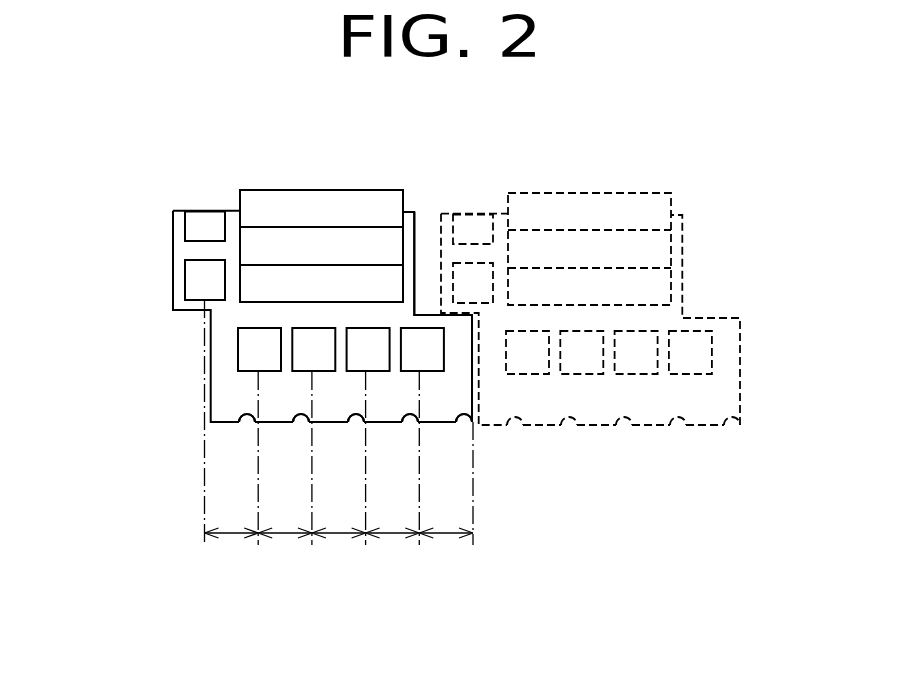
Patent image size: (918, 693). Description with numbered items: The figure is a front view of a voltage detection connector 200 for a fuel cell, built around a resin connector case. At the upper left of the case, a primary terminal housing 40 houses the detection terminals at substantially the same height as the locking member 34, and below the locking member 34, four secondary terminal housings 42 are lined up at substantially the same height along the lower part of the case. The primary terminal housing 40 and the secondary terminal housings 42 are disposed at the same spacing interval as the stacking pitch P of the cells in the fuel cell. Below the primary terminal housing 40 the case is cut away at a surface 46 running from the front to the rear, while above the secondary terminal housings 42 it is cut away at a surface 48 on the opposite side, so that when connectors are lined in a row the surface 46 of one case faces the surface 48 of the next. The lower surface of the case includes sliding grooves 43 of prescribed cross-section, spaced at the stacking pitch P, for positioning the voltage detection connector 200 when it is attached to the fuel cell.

The locking member 34 is at (363, 195).
The primary terminal housing 40 is at (190, 282).
The secondary terminal housing 42 is at (270, 371).
The sliding groove 43 is at (247, 428).
The surface 46 is at (187, 312).
The surface 48 is at (421, 312).
The voltage detection connector 200 is at (363, 612).